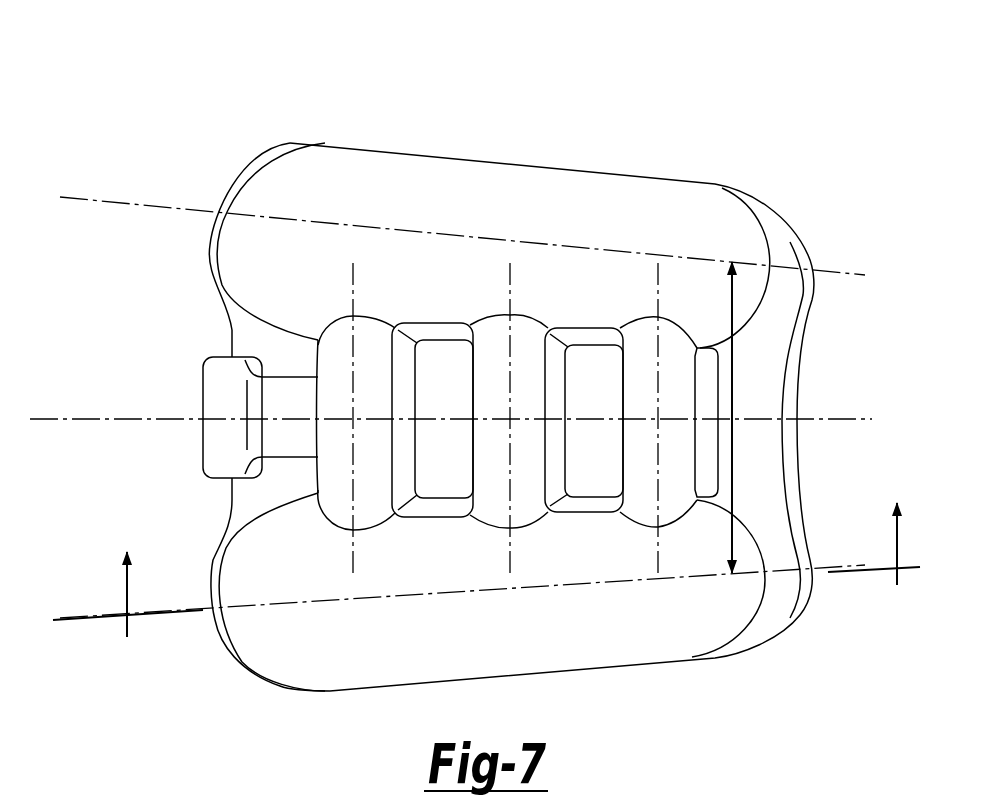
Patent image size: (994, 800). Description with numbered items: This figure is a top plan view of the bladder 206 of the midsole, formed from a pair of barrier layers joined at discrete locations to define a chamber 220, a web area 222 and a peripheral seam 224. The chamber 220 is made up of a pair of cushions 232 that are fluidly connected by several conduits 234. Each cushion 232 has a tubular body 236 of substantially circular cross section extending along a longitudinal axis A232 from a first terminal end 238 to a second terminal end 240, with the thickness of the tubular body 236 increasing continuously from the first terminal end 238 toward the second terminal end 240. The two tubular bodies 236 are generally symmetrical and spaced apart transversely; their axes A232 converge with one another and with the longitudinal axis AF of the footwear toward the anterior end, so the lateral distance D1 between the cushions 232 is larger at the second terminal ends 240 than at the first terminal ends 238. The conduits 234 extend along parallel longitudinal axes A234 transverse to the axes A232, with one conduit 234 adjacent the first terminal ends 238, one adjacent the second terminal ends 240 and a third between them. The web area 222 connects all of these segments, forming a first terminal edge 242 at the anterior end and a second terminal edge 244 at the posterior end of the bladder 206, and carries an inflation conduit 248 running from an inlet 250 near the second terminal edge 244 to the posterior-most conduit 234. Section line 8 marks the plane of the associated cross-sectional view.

The bladder 206 is at (790, 145).
The chamber 220 is at (513, 178).
The web area 222 is at (262, 340).
The peripheral seam 224 is at (276, 143).
The cushion 232 is at (323, 140).
The conduit 234 is at (343, 360).
The tubular body 236 is at (690, 197).
The first terminal end 238 is at (780, 250).
The second terminal end 240 is at (260, 185).
The first terminal edge 242 is at (790, 370).
The second terminal edge 244 is at (233, 492).
The inflation conduit 248 is at (273, 432).
The inlet 250 is at (218, 395).
The longitudinal axis of the cushion A232 is at (52, 697).
The longitudinal axis of the conduit A234 is at (658, 533).
The longitudinal axis of the footwear AF is at (37, 417).
The lateral distance D1 is at (736, 417).
The section line 8- 8 is at (486, 591).